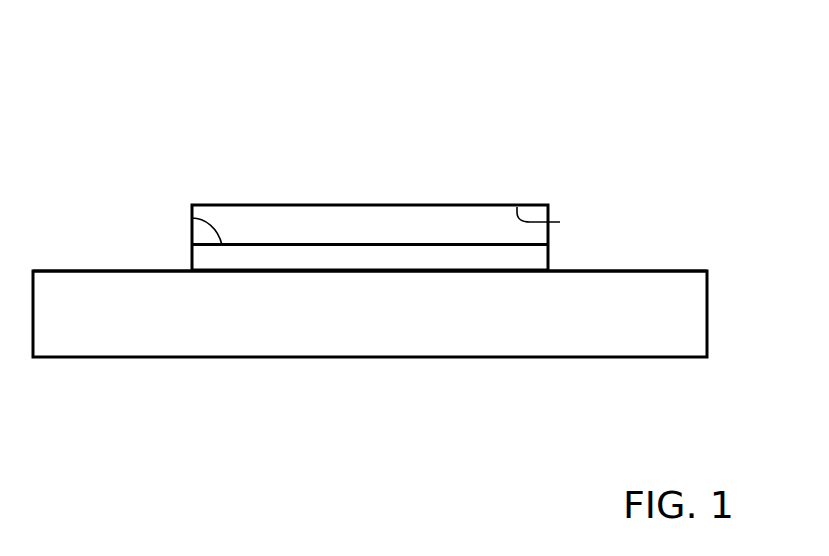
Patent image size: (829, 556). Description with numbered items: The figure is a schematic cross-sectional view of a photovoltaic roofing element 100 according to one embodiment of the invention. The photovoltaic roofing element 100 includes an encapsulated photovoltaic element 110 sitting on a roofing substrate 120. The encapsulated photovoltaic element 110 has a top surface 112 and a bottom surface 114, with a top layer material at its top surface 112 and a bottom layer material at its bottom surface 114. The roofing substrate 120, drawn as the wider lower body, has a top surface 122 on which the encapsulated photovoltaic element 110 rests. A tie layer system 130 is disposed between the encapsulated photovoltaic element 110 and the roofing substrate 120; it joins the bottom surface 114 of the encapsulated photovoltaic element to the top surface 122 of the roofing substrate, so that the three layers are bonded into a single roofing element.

The photovoltaic roofing element 100 is at (585, 77).
The encapsulated photovoltaic element 110 is at (378, 223).
The top surface 112 is at (560, 222).
The bottom surface 114 is at (192, 218).
The roofing substrate 120 is at (633, 332).
The top surface 122 is at (235, 273).
The tie layer system 130 is at (525, 258).